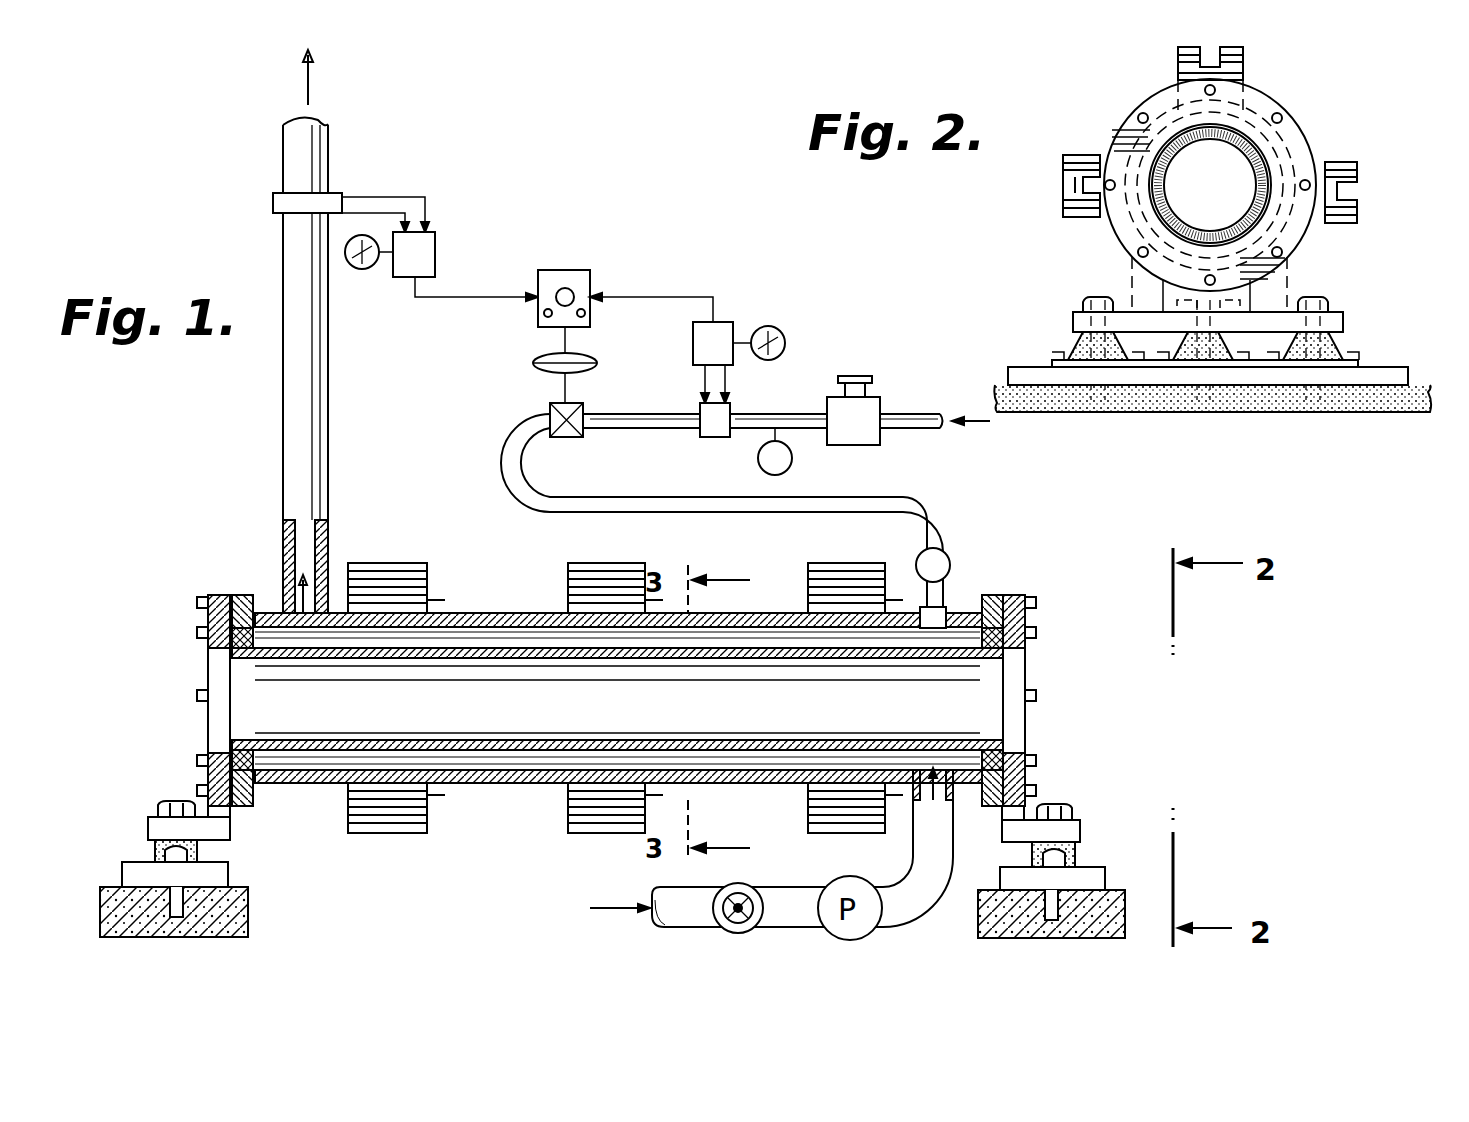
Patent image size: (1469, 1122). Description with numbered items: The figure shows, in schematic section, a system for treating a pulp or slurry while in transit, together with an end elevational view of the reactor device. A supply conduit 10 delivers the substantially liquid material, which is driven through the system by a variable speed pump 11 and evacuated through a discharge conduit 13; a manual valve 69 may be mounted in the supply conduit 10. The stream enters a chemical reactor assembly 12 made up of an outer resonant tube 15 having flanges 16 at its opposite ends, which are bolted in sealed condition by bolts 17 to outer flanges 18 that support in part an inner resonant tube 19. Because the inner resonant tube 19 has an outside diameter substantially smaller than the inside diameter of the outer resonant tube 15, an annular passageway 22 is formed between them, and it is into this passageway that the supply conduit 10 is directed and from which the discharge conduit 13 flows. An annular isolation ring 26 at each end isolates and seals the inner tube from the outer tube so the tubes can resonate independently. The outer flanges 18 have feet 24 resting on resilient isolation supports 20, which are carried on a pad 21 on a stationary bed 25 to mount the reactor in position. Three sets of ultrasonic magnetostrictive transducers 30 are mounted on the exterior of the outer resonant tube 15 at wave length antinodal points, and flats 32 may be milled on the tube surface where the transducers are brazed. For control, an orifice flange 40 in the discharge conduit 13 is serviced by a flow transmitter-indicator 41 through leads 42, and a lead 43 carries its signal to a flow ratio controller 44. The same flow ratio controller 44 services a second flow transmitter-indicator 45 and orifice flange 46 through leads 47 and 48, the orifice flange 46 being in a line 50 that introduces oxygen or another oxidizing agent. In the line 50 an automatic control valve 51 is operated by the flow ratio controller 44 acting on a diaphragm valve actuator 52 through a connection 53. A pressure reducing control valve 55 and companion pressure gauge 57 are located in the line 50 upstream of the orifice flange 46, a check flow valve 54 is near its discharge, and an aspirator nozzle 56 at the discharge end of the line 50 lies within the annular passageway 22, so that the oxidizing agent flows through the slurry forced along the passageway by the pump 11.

In FIG. 1, the supply conduit 10 is at (800, 910).
In FIG. 1, the variable speed pump 11 is at (870, 932).
In FIG. 1, the chemical reactor assembly 12 is at (617, 727).
In FIG. 2, the chemical reactor assembly 12 is at (1171, 183).
In FIG. 1, the discharge conduit 13 is at (300, 130).
In FIG. 1, the outer resonant tube 15 is at (490, 613).
In FIG. 2, the outer resonant tube 15 is at (1165, 112).
In FIG. 1, the flanges 16 is at (243, 598).
In FIG. 1, the bolts 17 is at (197, 632).
In FIG. 2, the bolts 17 is at (1112, 190).
In FIG. 1, the flanges 18 is at (217, 598).
In FIG. 2, the flanges 18 is at (1262, 110).
In FIG. 1, the inner resonant tube 19 is at (748, 648).
In FIG. 2, the inner resonant tube 19 is at (1243, 168).
In FIG. 1, the resilient isolation supports 20 is at (197, 850).
In FIG. 2, the resilient isolation supports 20 is at (1078, 350).
In FIG. 1, the pad 21 is at (130, 872).
In FIG. 2, the pad 21 is at (1258, 375).
In FIG. 1, the annular passageway 22 is at (495, 752).
In FIG. 2, the annular passageway 22 is at (1270, 222).
In FIG. 1, the feet 24 is at (162, 825).
In FIG. 2, the feet 24 is at (1080, 320).
In FIG. 1, the stationary bed 25 is at (240, 915).
In FIG. 2, the stationary bed 25 is at (1390, 395).
In FIG. 1, the annular isolation ring 26 is at (232, 640).
In FIG. 1, the ultrasonic magnetostrictive transducers 30 is at (378, 563).
In FIG. 2, the ultrasonic magnetostrictive transducers 30 is at (1230, 58).
In FIG. 1, the flats 32 is at (597, 632).
In FIG. 1, the orifice flange 40 is at (273, 203).
In FIG. 1, the flow transmitter-indicator 41 is at (435, 250).
In FIG. 1, the leads 42 is at (420, 197).
In FIG. 1, the lead 43 is at (410, 297).
In FIG. 1, the flow ratio controller 44 is at (558, 275).
In FIG. 1, the second flow transmitter-indicator 45 is at (720, 322).
In FIG. 1, the orifice flange 46 is at (716, 437).
In FIG. 1, the leads 47 is at (680, 297).
In FIG. 1, the leads 48 is at (705, 388).
In FIG. 1, the line 50 is at (638, 428).
In FIG. 1, the automatic control valve 51 is at (550, 412).
In FIG. 1, the diaphragm valve actuator 52 is at (580, 358).
In FIG. 1, the connection 53 is at (565, 343).
In FIG. 1, the check flow valve 54 is at (945, 555).
In FIG. 1, the pressure reducing control valve 55 is at (845, 405).
In FIG. 1, the aspirator nozzle 56 is at (927, 588).
In FIG. 1, the pressure gauge 57 is at (792, 458).
In FIG. 1, the manual valve 69 is at (735, 930).